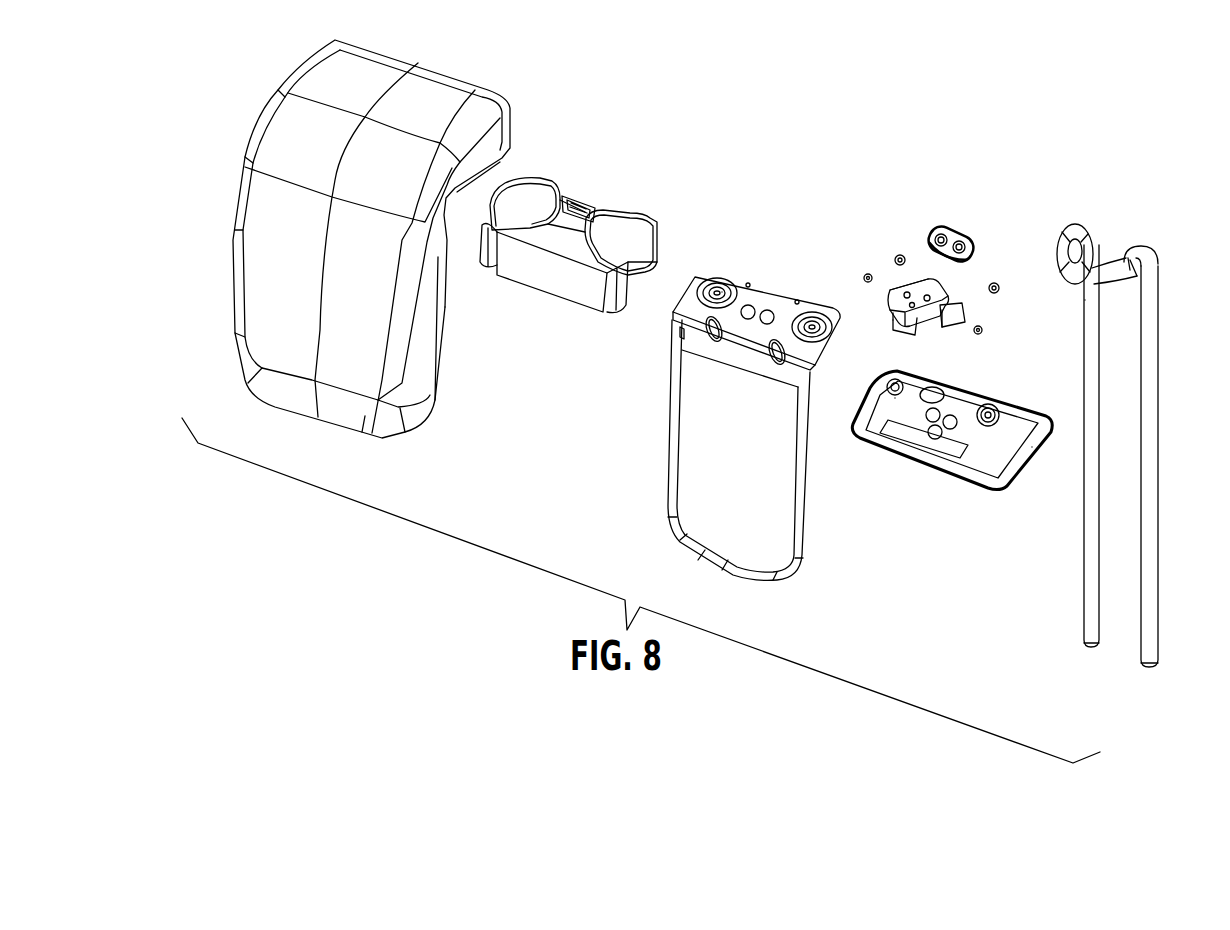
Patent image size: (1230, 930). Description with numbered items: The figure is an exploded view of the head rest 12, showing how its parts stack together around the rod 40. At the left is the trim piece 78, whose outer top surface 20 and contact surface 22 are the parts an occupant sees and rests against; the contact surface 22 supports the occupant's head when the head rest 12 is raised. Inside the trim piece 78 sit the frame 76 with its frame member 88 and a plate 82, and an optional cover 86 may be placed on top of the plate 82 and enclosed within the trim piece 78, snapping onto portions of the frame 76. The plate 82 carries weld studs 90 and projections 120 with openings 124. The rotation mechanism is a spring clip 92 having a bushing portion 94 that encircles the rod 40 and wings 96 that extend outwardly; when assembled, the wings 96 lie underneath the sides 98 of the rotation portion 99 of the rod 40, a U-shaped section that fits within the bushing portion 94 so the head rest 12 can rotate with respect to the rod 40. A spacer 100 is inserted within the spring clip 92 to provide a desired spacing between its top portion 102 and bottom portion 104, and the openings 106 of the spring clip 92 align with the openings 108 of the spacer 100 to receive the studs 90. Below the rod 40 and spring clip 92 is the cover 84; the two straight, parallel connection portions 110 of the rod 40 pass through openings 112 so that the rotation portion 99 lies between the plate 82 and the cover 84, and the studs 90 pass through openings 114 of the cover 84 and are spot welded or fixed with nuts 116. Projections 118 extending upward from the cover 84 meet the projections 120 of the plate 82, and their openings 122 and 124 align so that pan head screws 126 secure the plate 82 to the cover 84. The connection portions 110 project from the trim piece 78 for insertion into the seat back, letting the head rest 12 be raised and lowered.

The head rest 12 is at (1190, 162).
The top surface 20 is at (460, 80).
The contact surface 22 is at (350, 287).
The rod 40 is at (1138, 427).
The frame 76 is at (725, 400).
The trim piece 78 is at (452, 352).
The plate 82 is at (683, 303).
The cover 84 is at (946, 461).
The cover 86 is at (527, 182).
The cradle frame 88 is at (676, 474).
The weld studs 90 is at (768, 310).
The spring clip 92 is at (927, 304).
The bushing portion 94 is at (902, 326).
The wings 96 is at (893, 316).
The sides 98 is at (1105, 254).
The rotation portion 99 is at (1078, 278).
The spacer 100 is at (943, 219).
The top portion 102 is at (905, 284).
The bottom portion 104 is at (962, 310).
The openings 106 is at (925, 288).
The openings 108 is at (958, 241).
The connection portions 110 is at (1146, 568).
The openings 112 is at (978, 393).
The openings 114 is at (928, 434).
The nuts 116 is at (901, 254).
The projections 118 is at (895, 400).
The projections 120 is at (722, 290).
The openings 122 is at (1022, 405).
The openings 124 is at (715, 290).
The pan head screws 126 is at (868, 283).